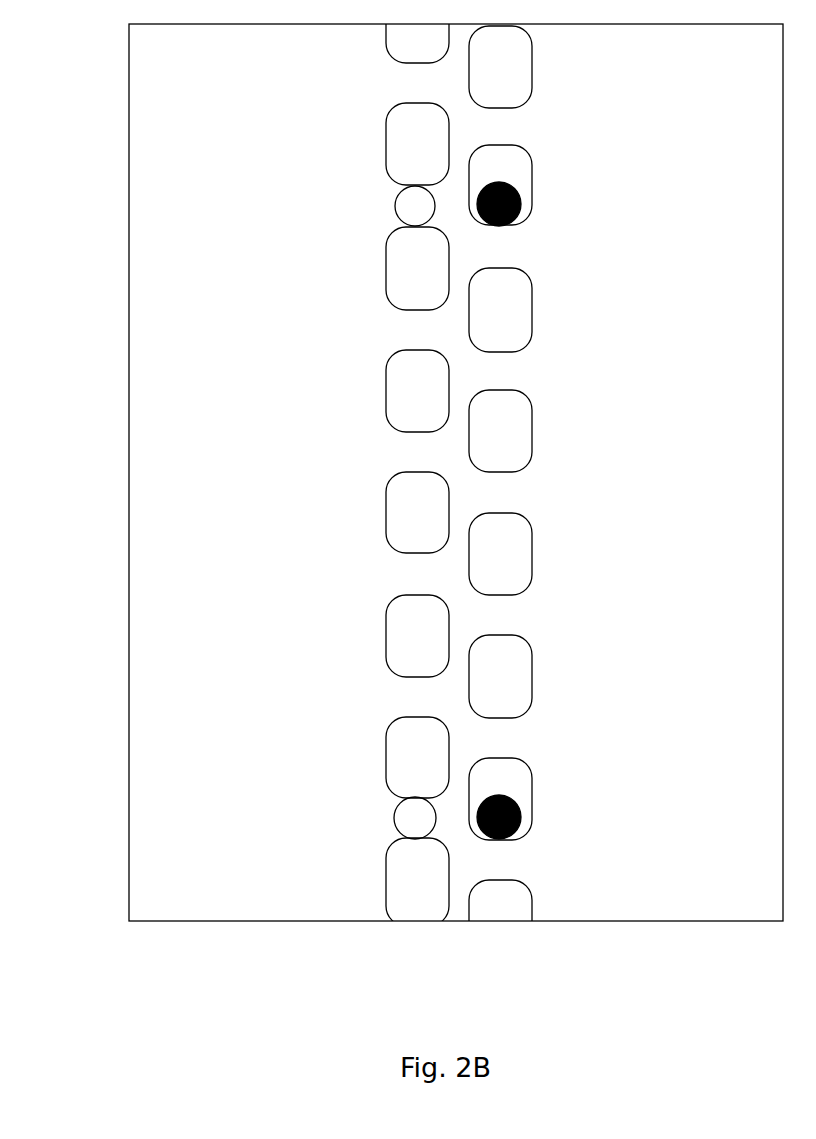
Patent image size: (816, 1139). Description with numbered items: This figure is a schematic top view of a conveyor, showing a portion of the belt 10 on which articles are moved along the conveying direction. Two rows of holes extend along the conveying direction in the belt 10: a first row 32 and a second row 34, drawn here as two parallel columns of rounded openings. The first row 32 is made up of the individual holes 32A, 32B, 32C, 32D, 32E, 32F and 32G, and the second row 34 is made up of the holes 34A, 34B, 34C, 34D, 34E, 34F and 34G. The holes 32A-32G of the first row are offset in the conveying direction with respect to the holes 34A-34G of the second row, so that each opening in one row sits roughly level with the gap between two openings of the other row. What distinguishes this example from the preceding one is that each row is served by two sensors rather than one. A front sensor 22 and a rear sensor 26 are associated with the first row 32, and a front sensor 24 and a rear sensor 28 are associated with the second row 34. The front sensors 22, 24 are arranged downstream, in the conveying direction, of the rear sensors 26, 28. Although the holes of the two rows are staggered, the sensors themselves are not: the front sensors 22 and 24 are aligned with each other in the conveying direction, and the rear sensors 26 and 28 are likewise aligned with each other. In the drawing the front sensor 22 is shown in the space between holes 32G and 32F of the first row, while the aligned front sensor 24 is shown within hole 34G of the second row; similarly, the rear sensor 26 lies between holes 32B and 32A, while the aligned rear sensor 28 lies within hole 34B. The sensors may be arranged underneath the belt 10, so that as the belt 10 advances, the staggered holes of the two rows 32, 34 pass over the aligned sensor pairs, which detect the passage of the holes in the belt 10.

The belt 10 is at (172, 797).
The front sensor 22 is at (415, 205).
The front sensor 24 is at (518, 210).
The rear sensor 26 is at (395, 812).
The rear sensor 28 is at (518, 826).
The first row of holes 32 is at (357, 563).
The hole 32A is at (417, 886).
The hole 32B is at (417, 757).
The hole 32C is at (417, 636).
The hole 32D is at (417, 513).
The hole 32E is at (417, 392).
The hole 32F is at (417, 268).
The hole 32G is at (417, 145).
The second row of holes 34 is at (566, 578).
The hole 34A is at (500, 930).
The hole 34B is at (498, 779).
The hole 34C is at (498, 678).
The hole 34D is at (498, 553).
The hole 34E is at (498, 432).
The hole 34F is at (498, 312).
The hole 34G is at (495, 168).